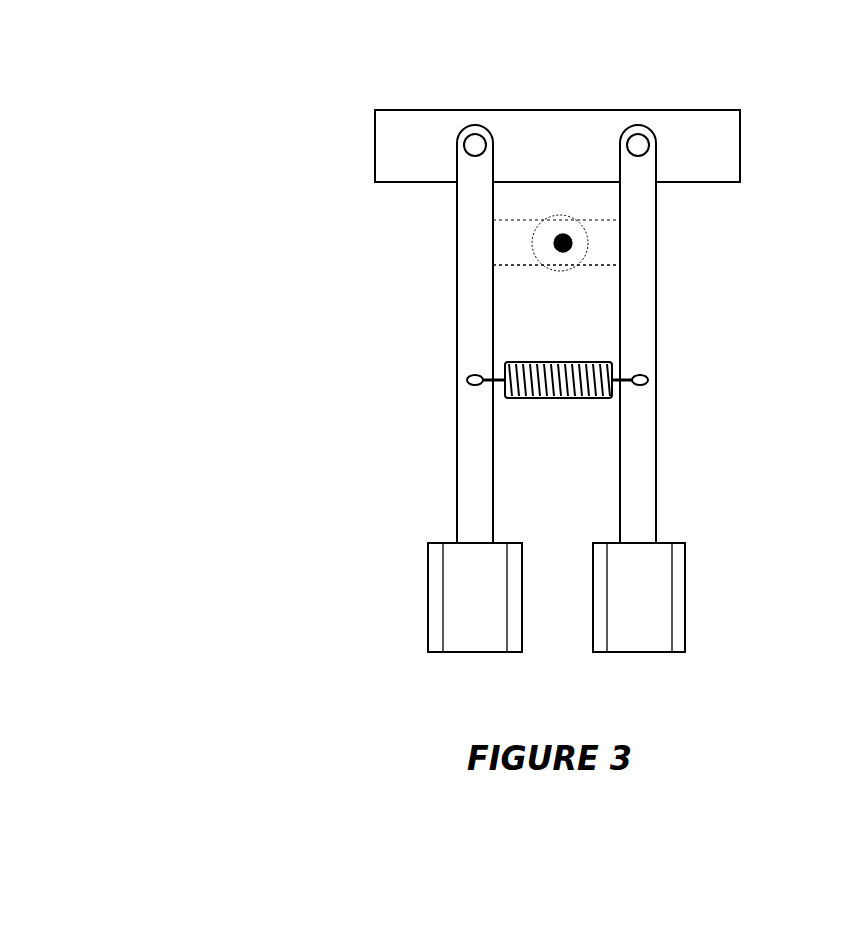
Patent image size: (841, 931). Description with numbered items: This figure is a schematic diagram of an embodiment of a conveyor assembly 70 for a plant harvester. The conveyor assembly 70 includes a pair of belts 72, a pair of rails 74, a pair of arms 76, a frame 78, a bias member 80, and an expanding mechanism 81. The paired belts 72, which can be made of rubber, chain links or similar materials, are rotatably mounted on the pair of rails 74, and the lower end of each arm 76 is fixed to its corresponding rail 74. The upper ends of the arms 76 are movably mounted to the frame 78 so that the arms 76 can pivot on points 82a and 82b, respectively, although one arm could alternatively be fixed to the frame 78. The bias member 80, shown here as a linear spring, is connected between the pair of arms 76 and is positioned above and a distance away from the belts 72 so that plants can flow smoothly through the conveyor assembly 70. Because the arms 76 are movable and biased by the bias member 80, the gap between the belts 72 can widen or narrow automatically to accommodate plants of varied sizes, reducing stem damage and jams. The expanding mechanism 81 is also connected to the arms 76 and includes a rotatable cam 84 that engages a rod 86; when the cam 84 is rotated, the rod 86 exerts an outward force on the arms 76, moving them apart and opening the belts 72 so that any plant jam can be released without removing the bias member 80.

The conveyor assembly 70 is at (213, 92).
The pair of belts 72 is at (428, 590).
The pair of rails 74 is at (477, 653).
The pair of arms 76 is at (456, 310).
The frame 78 is at (537, 108).
The bias member 80 is at (522, 358).
The expanding mechanism 81 is at (610, 204).
The pivot point 82a is at (466, 140).
The pivot point 82b is at (650, 140).
The rotatable cam 84 is at (548, 225).
The rod 86 is at (513, 262).